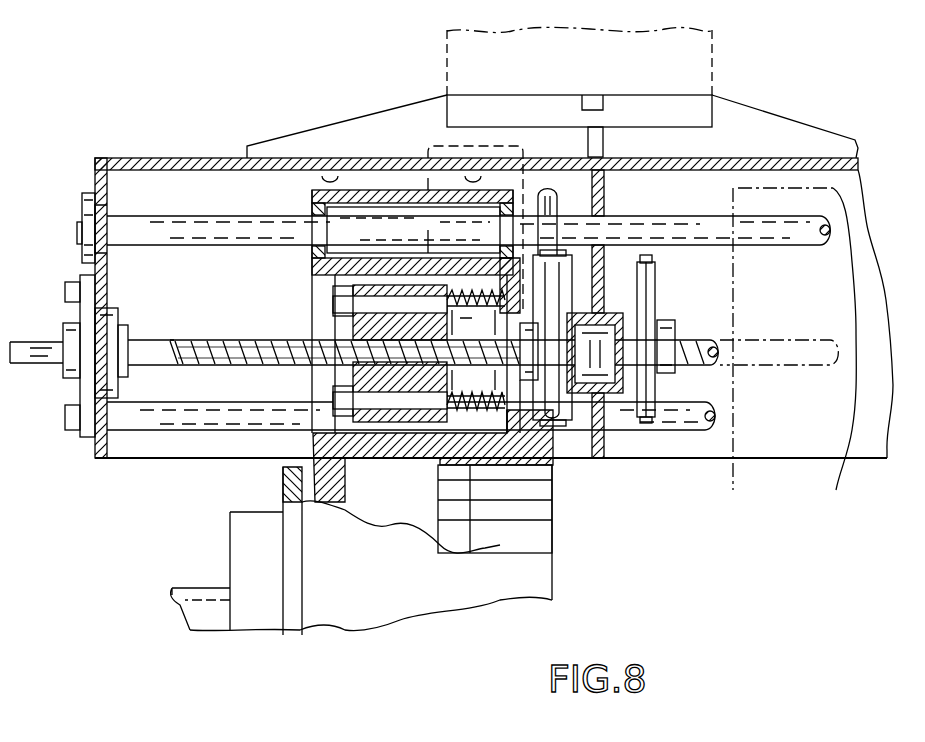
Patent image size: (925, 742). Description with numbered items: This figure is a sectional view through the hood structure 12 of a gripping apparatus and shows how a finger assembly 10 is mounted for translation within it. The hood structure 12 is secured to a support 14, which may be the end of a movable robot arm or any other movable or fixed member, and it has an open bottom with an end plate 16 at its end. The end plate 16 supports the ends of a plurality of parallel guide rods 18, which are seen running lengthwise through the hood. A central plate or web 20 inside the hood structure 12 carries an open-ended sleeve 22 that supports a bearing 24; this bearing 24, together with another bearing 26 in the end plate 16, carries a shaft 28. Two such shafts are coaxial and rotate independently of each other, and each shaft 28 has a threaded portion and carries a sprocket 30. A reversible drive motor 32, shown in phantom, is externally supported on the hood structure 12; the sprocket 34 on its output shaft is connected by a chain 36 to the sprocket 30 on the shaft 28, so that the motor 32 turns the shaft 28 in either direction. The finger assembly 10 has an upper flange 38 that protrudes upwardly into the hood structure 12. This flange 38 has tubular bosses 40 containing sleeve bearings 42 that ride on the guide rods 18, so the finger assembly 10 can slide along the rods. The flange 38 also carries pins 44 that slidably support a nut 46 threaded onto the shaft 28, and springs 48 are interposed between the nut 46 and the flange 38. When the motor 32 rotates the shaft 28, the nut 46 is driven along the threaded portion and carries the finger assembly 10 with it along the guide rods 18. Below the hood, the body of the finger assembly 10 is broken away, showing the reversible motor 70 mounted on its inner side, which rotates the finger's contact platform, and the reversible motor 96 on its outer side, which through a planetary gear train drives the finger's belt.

The finger assembly 10 is at (160, 548).
The hood structure 12 is at (771, 96).
The support 14 is at (693, 62).
The end plate 16 is at (95, 178).
The guide rod 18 is at (666, 228).
The central plate or web 20 is at (604, 460).
The open-ended sleeve 22 is at (608, 312).
The bearing 24 is at (618, 370).
The bearing 26 is at (108, 322).
The shaft 28 is at (170, 355).
The sprocket 30 is at (652, 290).
The reversible drive motor 32 is at (442, 147).
The sprocket 34 is at (572, 195).
The chain 36 is at (645, 318).
The upper flange 38 is at (476, 313).
The tubular boss 40 is at (373, 190).
The sleeve bearing 42 is at (328, 212).
The pin 44 is at (386, 436).
The nut 46 is at (335, 392).
The spring 48 is at (476, 388).
The reversible motor 70 is at (540, 522).
The reversible motor 96 is at (203, 598).